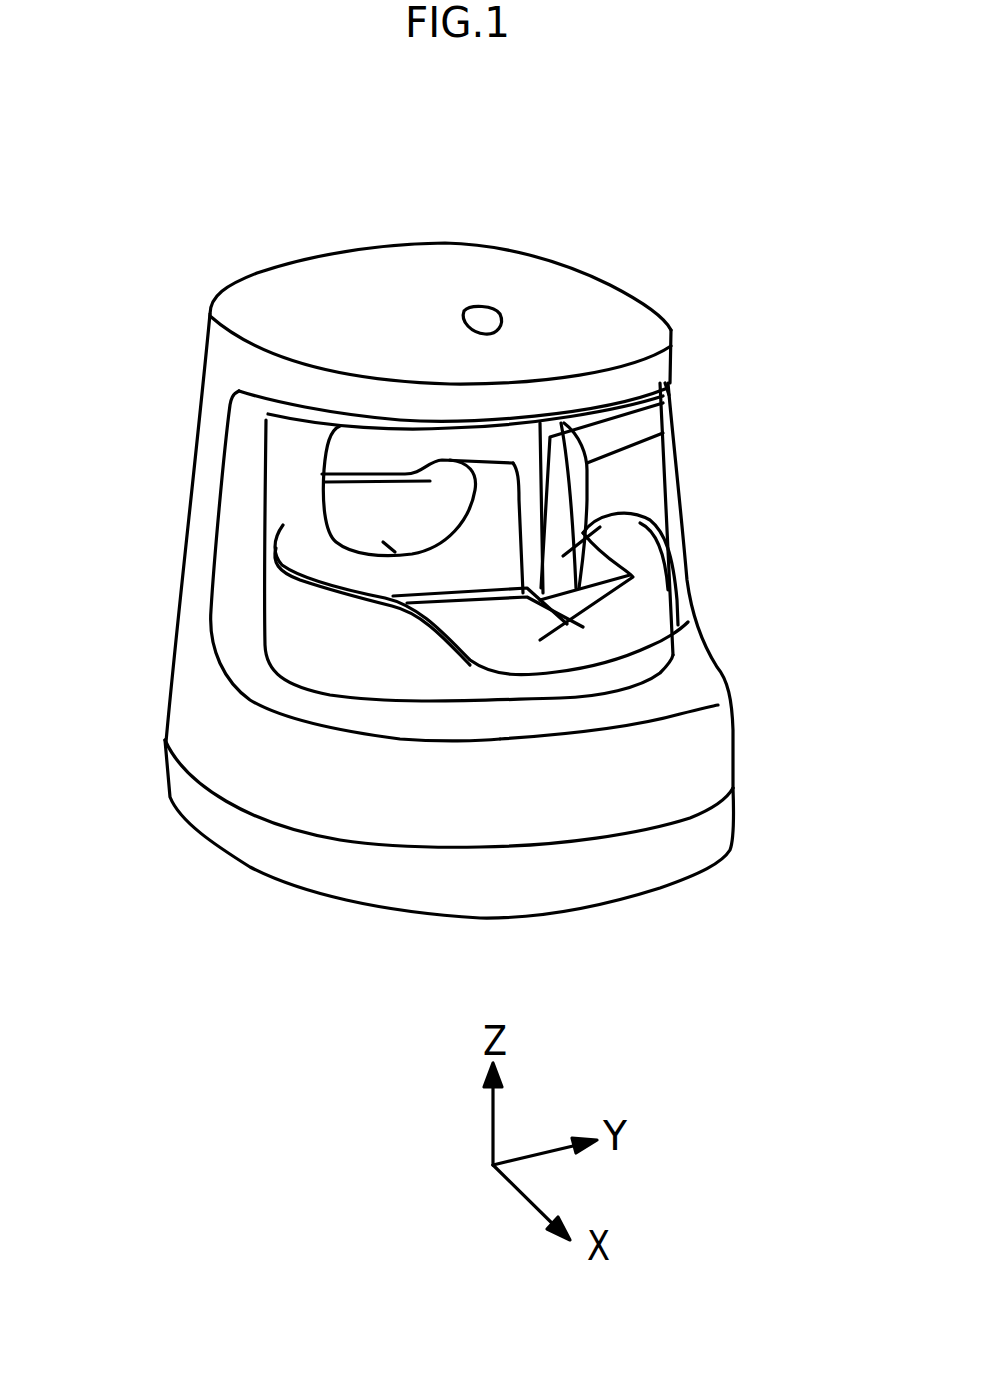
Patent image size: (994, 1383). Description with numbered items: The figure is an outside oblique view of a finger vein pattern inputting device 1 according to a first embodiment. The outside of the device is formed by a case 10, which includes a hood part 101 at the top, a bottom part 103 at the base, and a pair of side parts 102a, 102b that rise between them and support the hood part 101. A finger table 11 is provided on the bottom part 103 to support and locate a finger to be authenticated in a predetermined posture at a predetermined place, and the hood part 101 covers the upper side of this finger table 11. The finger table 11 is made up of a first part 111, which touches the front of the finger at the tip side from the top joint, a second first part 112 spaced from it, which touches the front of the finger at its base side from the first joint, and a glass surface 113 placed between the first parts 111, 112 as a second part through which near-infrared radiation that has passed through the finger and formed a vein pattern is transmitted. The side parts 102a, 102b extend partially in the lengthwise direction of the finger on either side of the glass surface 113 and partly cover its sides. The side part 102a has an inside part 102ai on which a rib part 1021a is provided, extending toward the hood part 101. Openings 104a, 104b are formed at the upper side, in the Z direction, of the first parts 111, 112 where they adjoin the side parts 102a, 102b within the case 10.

The finger vein pattern inputting device 1 is at (652, 127).
The case 10 is at (582, 288).
The hood part 101 is at (362, 282).
The side part 102a is at (681, 481).
The inside part 102ai is at (641, 522).
The side part 102b is at (212, 456).
The rib part 1021a is at (663, 433).
The bottom part 103 is at (210, 727).
The opening 104a is at (393, 447).
The opening 104b is at (506, 548).
The finger table 11 is at (628, 660).
The first part 111 is at (347, 513).
The first part 112 is at (630, 613).
The glass surface 113 is at (487, 627).